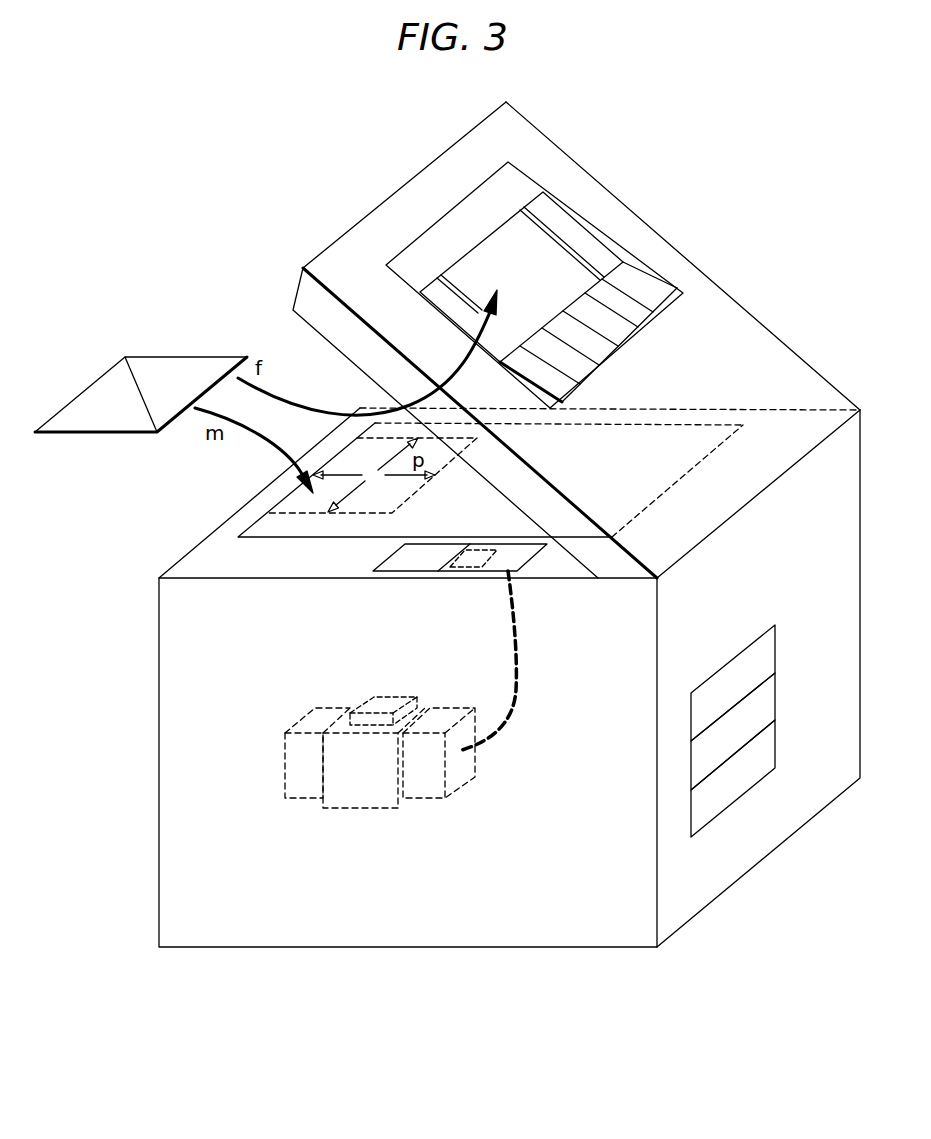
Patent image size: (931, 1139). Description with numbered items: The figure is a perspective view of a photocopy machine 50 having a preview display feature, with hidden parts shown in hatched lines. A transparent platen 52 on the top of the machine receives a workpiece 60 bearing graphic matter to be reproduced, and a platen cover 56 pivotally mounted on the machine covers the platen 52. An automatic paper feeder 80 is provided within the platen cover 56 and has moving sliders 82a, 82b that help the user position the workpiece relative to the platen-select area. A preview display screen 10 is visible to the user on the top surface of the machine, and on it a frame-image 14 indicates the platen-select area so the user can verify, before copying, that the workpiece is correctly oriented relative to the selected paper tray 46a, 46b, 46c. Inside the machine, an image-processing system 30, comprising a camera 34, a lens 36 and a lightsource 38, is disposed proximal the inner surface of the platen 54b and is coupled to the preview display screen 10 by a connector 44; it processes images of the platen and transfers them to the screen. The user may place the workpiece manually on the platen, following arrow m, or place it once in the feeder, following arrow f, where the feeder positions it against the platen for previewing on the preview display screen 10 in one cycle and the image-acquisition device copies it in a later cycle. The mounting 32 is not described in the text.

The preview display screen 10 is at (517, 557).
The frame-image 14 is at (462, 563).
The image-processing system 30 is at (336, 764).
The mounting card 32 is at (403, 558).
The camera 34 is at (385, 802).
The lens 36 is at (363, 700).
The lightsource 38 is at (285, 748).
The connector 44 is at (520, 683).
The paper tray 46a is at (770, 652).
The paper tray 46b is at (770, 710).
The paper tray 46c is at (767, 749).
The photocopy machine 50 is at (707, 172).
The transparent platen 52 is at (433, 511).
The inner surface of the platen 54b is at (289, 560).
The platen cover 56 is at (738, 322).
The workpiece 60 is at (144, 382).
The automatic paper feeder 80 is at (490, 190).
The moving slider 82a is at (537, 233).
The moving slider 82b is at (465, 303).